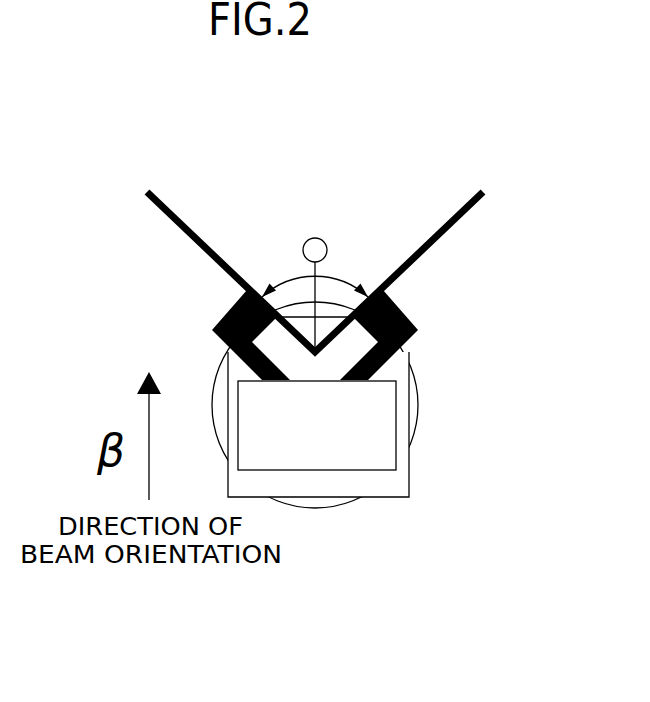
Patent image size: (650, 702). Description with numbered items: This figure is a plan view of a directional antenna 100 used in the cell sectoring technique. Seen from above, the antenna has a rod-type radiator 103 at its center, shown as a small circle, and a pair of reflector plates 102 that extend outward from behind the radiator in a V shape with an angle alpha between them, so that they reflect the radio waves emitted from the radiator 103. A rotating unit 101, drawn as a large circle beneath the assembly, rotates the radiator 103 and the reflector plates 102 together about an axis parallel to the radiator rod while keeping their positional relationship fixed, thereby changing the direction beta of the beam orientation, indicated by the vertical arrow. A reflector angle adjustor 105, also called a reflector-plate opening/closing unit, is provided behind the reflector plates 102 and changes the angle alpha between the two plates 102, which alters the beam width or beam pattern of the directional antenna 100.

The directional antenna 100 is at (503, 116).
The rotating unit 101 is at (340, 508).
The reflector plates 102 is at (442, 239).
The rod-type radiator 103 is at (326, 245).
The reflector angle adjustor 105 is at (397, 435).